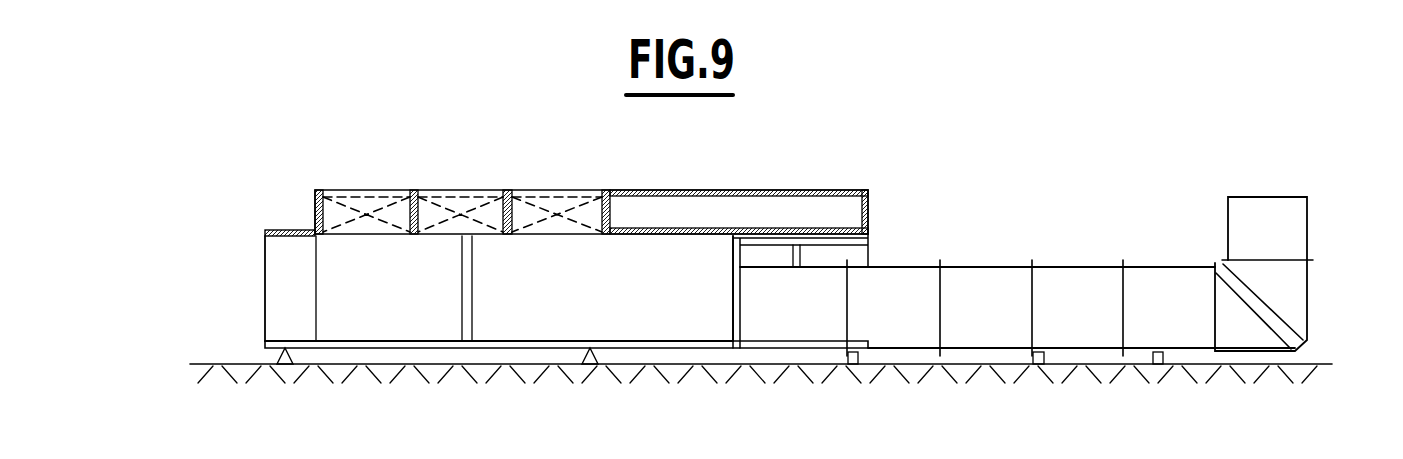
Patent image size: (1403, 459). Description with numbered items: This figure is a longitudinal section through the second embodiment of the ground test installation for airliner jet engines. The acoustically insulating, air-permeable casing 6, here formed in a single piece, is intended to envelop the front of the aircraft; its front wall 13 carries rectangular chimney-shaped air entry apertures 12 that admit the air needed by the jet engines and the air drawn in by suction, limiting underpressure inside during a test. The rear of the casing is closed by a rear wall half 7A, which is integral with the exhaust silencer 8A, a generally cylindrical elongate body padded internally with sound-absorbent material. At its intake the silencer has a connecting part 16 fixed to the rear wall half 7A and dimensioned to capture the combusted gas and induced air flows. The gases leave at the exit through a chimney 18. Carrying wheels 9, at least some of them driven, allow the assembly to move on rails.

The casing 6 is at (316, 189).
The front wall 13 is at (265, 249).
The air entry apertures 12 is at (273, 308).
The rear wall half 7A is at (733, 290).
The connecting part 16 is at (822, 302).
The exhaust silencer 8A is at (1060, 285).
The carrying wheels 9 is at (1152, 364).
The chimney 18 is at (1280, 200).